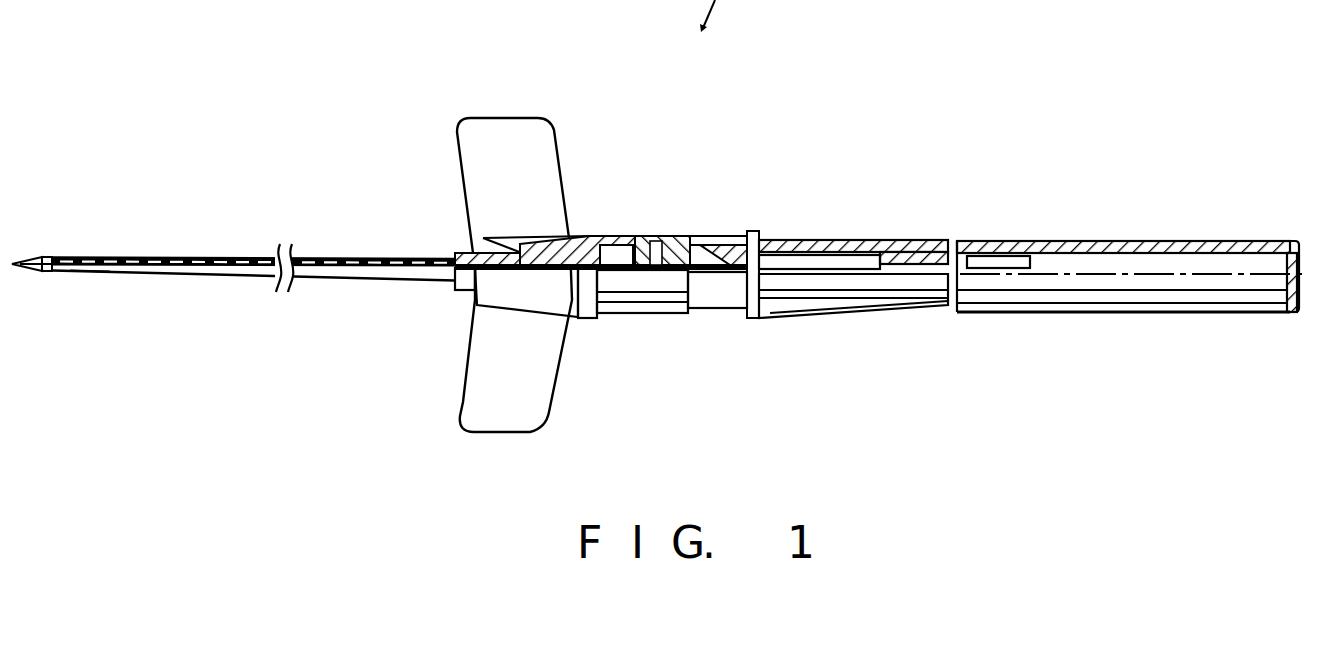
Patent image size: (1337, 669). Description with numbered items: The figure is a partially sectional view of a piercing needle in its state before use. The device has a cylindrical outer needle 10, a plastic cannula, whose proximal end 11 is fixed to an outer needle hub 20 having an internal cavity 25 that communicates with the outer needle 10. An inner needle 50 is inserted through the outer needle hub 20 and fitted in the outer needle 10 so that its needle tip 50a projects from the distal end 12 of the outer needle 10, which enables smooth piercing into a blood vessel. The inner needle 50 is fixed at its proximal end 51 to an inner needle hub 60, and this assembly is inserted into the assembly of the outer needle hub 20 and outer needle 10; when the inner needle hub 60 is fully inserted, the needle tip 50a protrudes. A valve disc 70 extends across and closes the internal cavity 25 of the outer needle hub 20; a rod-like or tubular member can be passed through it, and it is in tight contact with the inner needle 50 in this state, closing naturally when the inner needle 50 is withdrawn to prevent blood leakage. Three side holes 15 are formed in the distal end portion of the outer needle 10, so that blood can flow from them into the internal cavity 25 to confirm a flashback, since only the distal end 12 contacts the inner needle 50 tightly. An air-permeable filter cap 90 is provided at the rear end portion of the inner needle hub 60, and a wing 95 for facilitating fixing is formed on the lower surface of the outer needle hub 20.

The outer needle 10 is at (259, 218).
The proximal end of the outer needle 11 is at (518, 232).
The distal end of the outer needle 12 is at (53, 257).
The side holes 15 is at (105, 257).
The outer needle hub 20 is at (630, 322).
The internal cavity 25 is at (616, 251).
The inner needle 50 is at (47, 272).
The needle tip 50a is at (40, 257).
The proximal end of the inner needle 51 is at (736, 240).
The inner needle hub 60 is at (824, 233).
The valve disc 70 is at (651, 248).
The filter cap 90 is at (1082, 240).
The wing 95 is at (489, 130).